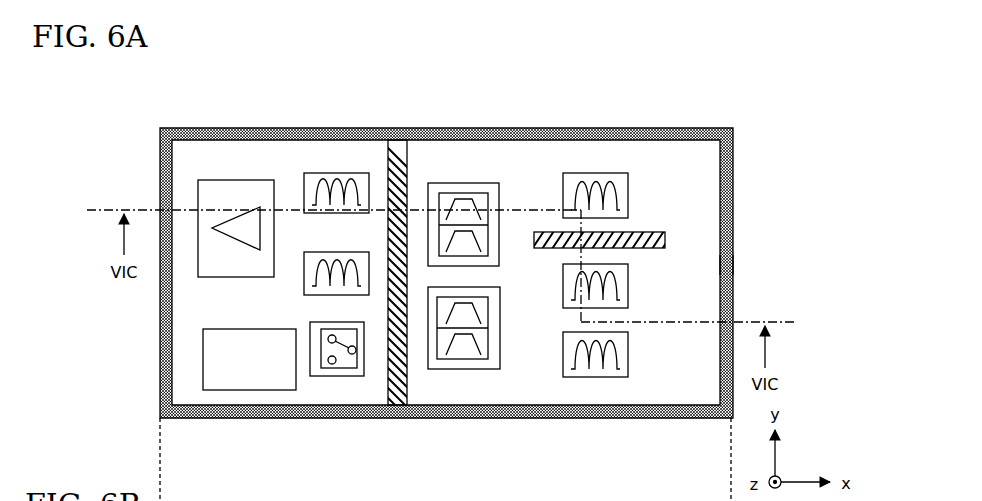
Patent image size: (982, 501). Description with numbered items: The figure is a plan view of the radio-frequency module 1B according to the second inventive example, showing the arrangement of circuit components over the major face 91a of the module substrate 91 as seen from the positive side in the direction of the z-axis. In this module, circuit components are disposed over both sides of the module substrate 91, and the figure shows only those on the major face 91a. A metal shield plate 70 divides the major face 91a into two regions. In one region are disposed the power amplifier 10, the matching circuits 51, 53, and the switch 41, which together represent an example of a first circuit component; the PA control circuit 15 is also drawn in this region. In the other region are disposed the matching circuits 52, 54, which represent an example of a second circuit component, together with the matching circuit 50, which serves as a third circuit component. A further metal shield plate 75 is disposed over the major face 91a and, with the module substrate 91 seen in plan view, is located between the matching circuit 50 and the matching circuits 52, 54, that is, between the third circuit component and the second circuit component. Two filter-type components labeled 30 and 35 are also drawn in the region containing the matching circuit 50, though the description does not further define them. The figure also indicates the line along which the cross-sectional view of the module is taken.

The radio-frequency module 1B is at (776, 134).
The power amplifier 10 is at (246, 189).
The PA control circuit 15 is at (246, 332).
The duplexer 30 is at (460, 183).
The duplexer 35 is at (440, 370).
The switch 41 is at (332, 325).
The matching circuit 50 is at (583, 173).
The matching circuit 51 is at (328, 173).
The matching circuit 52 is at (630, 288).
The matching circuit 53 is at (328, 252).
The matching circuit 54 is at (630, 357).
The metal shield plate 70 is at (408, 171).
The metal shield plate 75 is at (640, 232).
The module substrate 91 is at (708, 186).
The major face 91a is at (699, 257).